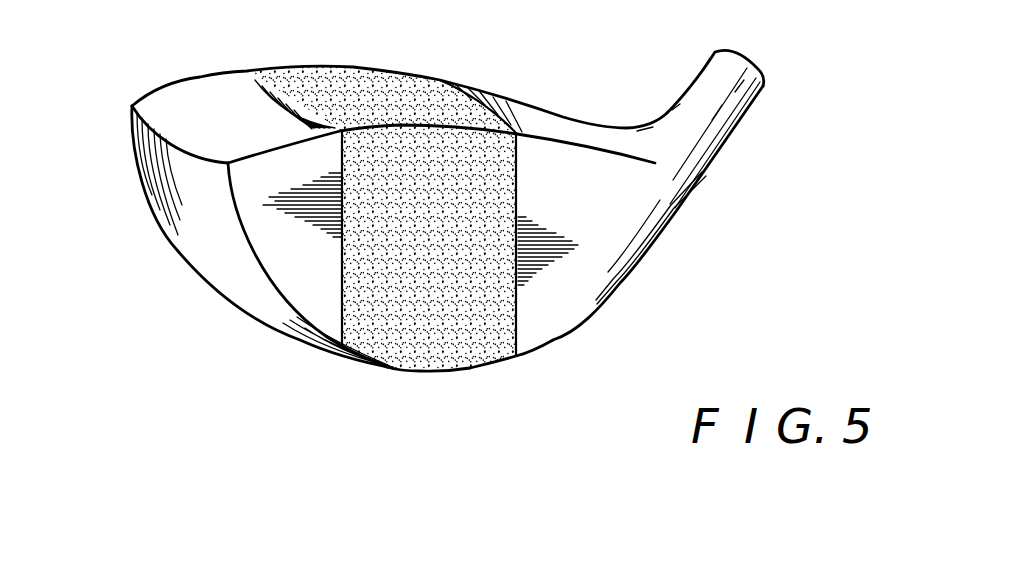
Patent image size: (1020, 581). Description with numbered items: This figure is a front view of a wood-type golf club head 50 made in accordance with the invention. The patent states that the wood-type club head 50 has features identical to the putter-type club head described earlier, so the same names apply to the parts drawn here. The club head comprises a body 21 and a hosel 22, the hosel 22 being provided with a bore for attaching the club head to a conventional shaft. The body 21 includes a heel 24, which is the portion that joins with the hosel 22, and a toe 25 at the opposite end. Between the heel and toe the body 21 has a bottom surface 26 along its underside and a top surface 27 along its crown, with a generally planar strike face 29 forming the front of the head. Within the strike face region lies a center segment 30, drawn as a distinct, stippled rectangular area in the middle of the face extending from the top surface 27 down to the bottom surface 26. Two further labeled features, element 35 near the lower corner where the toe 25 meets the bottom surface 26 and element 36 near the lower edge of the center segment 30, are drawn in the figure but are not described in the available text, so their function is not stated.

The wood-type club head 50 is at (786, 101).
The hosel 22 is at (716, 155).
The heel 24 is at (578, 317).
The sole edge of face insert 36 is at (519, 352).
The bottom surface 26 is at (477, 368).
The toe 25 is at (247, 304).
The body 21 is at (352, 368).
The center segment 30 is at (383, 350).
The top surface 27 is at (363, 80).
The strike face 29 is at (480, 143).
The lower face transition 35 is at (338, 337).